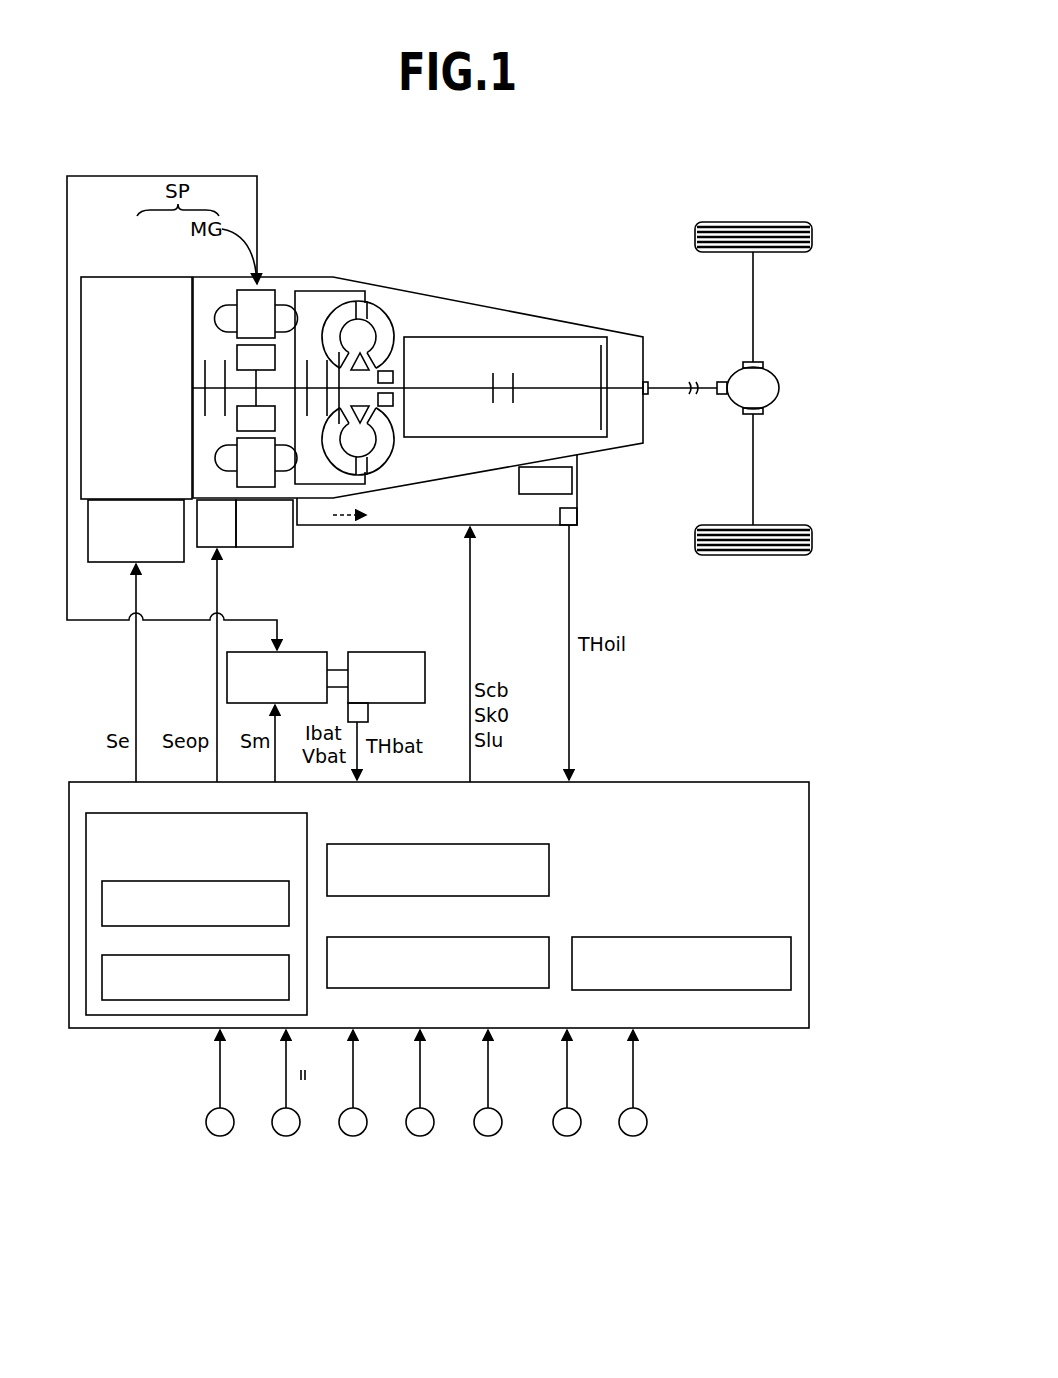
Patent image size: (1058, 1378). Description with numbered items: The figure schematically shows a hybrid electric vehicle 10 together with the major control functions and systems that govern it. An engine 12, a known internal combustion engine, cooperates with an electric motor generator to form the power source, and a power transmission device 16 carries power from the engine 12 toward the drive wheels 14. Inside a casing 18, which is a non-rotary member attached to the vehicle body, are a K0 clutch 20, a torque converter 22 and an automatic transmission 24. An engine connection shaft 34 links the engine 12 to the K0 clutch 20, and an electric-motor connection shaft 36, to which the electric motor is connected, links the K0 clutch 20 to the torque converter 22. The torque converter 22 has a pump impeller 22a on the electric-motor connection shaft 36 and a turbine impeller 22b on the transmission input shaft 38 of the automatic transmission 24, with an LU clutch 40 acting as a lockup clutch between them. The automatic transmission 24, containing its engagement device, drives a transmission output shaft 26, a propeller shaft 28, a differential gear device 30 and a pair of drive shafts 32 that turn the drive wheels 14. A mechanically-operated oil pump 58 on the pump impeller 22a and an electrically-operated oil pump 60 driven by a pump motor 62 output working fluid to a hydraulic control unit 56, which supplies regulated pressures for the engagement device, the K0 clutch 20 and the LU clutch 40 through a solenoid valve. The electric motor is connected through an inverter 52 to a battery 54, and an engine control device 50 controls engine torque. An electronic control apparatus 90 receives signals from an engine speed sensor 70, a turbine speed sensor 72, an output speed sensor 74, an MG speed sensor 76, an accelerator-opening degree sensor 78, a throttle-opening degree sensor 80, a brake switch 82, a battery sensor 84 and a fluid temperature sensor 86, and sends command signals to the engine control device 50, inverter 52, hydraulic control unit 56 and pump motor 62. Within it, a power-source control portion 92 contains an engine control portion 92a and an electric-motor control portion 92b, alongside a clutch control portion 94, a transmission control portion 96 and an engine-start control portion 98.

The vehicle 10 is at (601, 178).
The engine 12 is at (113, 290).
The drive wheels 14 is at (700, 238).
The power transmission device 16 is at (398, 221).
The casing 18 is at (284, 277).
The K0 clutch 20 is at (200, 402).
The torque converter 22 is at (399, 309).
The pump impeller 22a is at (378, 460).
The turbine impeller 22b is at (333, 453).
The automatic transmission 24 is at (567, 347).
The transmission output shaft 26 is at (602, 342).
The propeller shaft 28 is at (676, 394).
The differential gear device 30 is at (762, 380).
The drive shafts 32 is at (755, 310).
The engine connection shaft 34 is at (200, 386).
The electric-motor connection shaft 36 is at (235, 381).
The transmission input shaft 38 is at (411, 338).
The LU clutch 40 is at (307, 368).
The engine control device 50 is at (178, 558).
The inverter 52 is at (285, 660).
The battery 54 is at (383, 660).
The hydraulic control unit 56 is at (571, 460).
The MOP 58 is at (390, 406).
The EOP 60 is at (282, 548).
The pump motor 62 is at (226, 548).
The engine speed sensor 70 is at (223, 1134).
The turbine speed sensor 72 is at (289, 1134).
The output speed sensor 74 is at (356, 1134).
The MG speed sensor 76 is at (423, 1134).
The accelerator-opening degree sensor 78 is at (491, 1134).
The throttle-opening degree sensor 80 is at (570, 1134).
The brake switch 82 is at (636, 1134).
The battery sensor 84 is at (368, 713).
The fluid temperature sensor 86 is at (578, 515).
The electronic control apparatus 90 is at (737, 793).
The power-source control portion 92 is at (253, 817).
The engine control portion 92a is at (222, 884).
The electric-motor control portion 92b is at (222, 957).
The clutch control portion 94 is at (500, 852).
The transmission control portion 96 is at (500, 945).
The engine-start control portion 98 is at (737, 945).